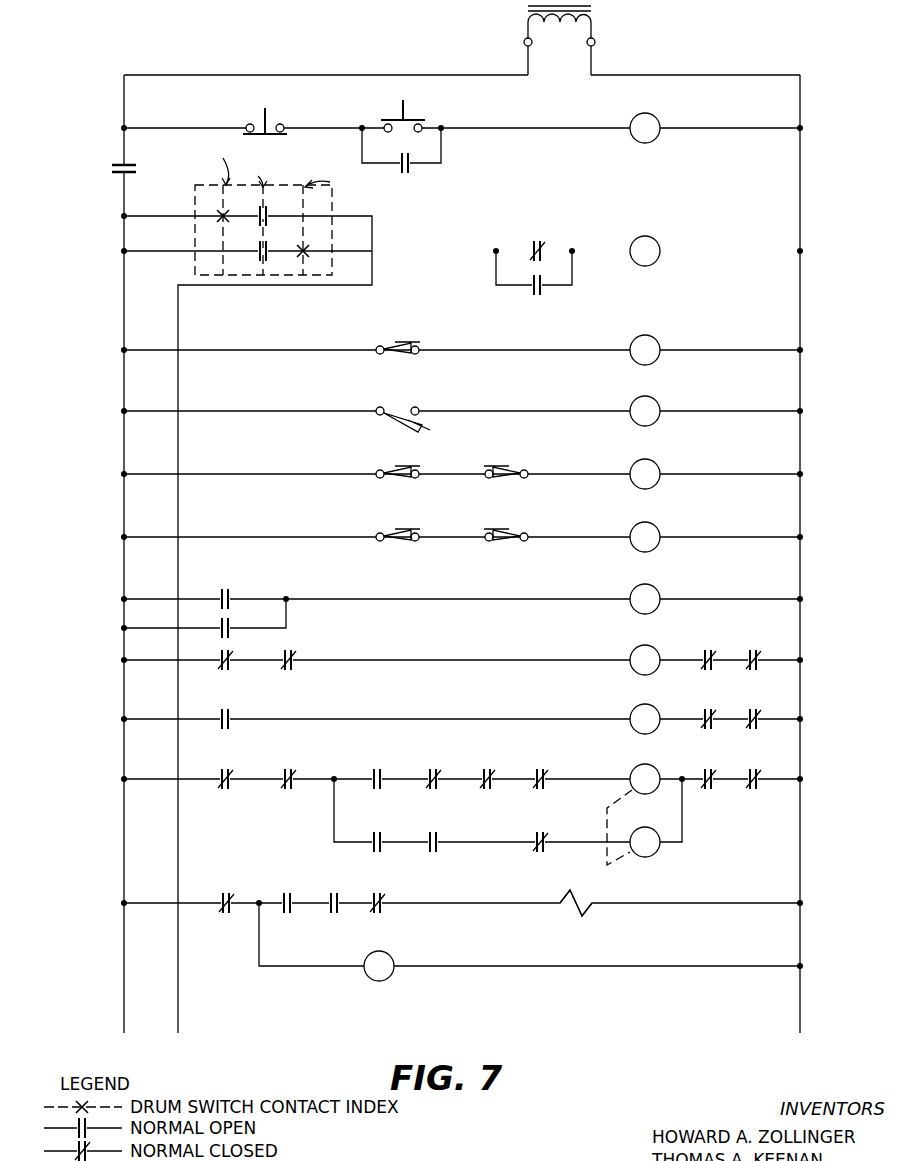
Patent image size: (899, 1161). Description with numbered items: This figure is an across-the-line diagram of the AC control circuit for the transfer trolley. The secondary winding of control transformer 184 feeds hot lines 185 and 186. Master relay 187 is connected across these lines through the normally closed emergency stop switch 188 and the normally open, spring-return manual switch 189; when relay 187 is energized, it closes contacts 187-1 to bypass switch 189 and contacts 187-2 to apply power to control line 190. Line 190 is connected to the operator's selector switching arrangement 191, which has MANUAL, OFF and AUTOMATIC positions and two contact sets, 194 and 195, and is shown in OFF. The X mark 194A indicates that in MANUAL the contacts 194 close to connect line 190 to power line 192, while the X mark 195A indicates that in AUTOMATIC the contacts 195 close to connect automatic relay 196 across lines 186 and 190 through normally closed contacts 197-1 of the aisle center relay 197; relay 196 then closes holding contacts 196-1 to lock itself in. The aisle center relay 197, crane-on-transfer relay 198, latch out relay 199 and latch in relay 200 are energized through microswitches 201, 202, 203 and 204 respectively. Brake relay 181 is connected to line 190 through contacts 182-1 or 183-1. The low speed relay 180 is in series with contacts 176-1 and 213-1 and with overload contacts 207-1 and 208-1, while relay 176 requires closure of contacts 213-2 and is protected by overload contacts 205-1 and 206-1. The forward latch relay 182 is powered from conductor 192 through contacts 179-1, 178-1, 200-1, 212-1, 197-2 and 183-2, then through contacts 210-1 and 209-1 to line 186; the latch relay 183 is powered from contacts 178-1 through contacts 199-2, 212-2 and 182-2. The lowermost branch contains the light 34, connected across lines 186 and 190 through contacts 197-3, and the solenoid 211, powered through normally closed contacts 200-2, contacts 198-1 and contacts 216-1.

The light 34 is at (368, 975).
The relay 176 is at (636, 708).
The normally closed contacts of relay 176 176-1 is at (232, 668).
The normally closed contacts of travel relay 178 178-1 is at (293, 790).
The normally closed contacts of travel relay 179 179-1 is at (230, 790).
The low speed relay 180 is at (636, 648).
The brake relay 181 is at (658, 588).
The forward latch relay 182 is at (638, 765).
The contacts of latch relay 182 182-1 is at (228, 590).
The contacts of latch relay 182 182-2 is at (572, 818).
The latch relay 183 is at (656, 855).
The contacts of latch relay 183 183-1 is at (240, 625).
The contacts of latch relay 183 183-2 is at (575, 762).
The control transformer 184 is at (526, 22).
The line 185 is at (122, 100).
The line 186 is at (806, 100).
The master relay 187 is at (658, 135).
The contacts of master relay 187 187-1 is at (416, 163).
The contacts of master relay 187 187-2 is at (122, 166).
The emergency stop switch 188 is at (270, 128).
The manually operable switch 189 is at (405, 120).
The control line 190 is at (122, 205).
The selector switching arrangement 191 is at (336, 200).
The power line 192 is at (372, 240).
The contacts of selector 191 194 is at (268, 210).
The X mark 194A is at (218, 217).
The contacts of selector 191 195 is at (264, 254).
The X mark 195A is at (312, 255).
The automatic relay 196 is at (659, 244).
The holding contacts of relay 196 196-1 is at (543, 290).
The aisle center relay 197 is at (660, 340).
The normally closed contacts of aisle center relay 197 197-1 is at (537, 245).
The contacts of aisle center relay 197 197-2 is at (505, 760).
The contacts of aisle center relay 197 197-3 is at (238, 912).
The crane-on-transfer relay 198 is at (658, 402).
The contacts of crane-on-transfer relay 198 198-1 is at (334, 913).
The latch out relay 199 is at (660, 465).
The contacts of latch out relay 199 199-2 is at (408, 814).
The latch in relay 200 is at (660, 527).
The contacts of latch in relay 200 200-1 is at (380, 772).
The normally closed contacts of latch in relay 200 200-2 is at (380, 893).
The microswitch 201 is at (400, 344).
The microswitch 202 is at (392, 406).
The microswitch 203 is at (400, 468).
The microswitch 204 is at (398, 530).
The contacts of overload relay 205 205-1 is at (714, 716).
The contacts of overload relay 206 206-1 is at (762, 714).
The contacts of overload relay 207 207-1 is at (735, 633).
The contacts of overload relay 208 208-1 is at (762, 654).
The contacts of overload relay 209 209-1 is at (762, 774).
The contacts of overload relay 210 210-1 is at (745, 762).
The solenoid 211 is at (575, 905).
The contacts of relay 212 212-1 is at (436, 770).
The contacts of relay 212 212-2 is at (452, 820).
The normally closed contacts of high speed relay 213 213-1 is at (295, 668).
The normally open contacts of high speed relay 213 213-2 is at (235, 722).
The contacts of DC control relay 216 216-1 is at (290, 893).